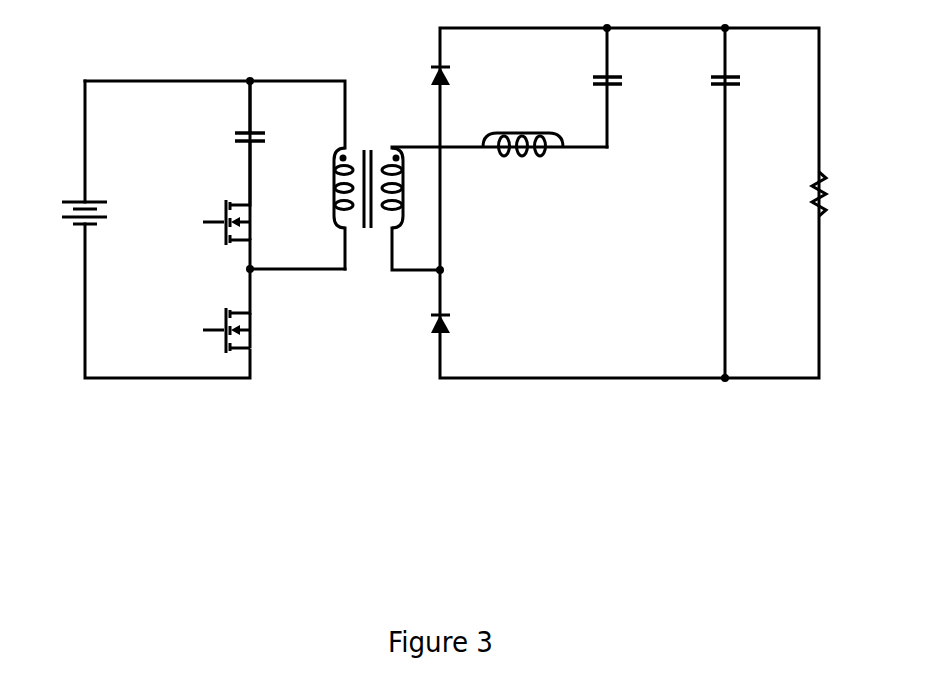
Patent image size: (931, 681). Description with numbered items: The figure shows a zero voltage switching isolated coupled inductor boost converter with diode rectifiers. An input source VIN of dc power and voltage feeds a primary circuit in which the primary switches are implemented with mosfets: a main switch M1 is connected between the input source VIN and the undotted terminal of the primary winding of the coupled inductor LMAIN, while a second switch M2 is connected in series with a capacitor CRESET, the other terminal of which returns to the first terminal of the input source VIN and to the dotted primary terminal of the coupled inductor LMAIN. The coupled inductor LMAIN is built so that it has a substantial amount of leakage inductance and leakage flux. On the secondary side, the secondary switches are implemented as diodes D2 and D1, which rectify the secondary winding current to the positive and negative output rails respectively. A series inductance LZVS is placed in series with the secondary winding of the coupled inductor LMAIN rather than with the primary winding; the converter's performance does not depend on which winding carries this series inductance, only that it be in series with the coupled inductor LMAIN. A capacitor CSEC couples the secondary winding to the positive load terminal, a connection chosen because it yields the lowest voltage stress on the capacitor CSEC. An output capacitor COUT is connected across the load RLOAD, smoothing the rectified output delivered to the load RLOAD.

The input source VIN is at (62, 215).
The capacitor CRESET is at (217, 143).
The primary switch mosfet M2 is at (217, 222).
The primary switch mosfet M1 is at (234, 330).
The coupled inductor LMAIN is at (372, 172).
The secondary switch diode D2 is at (423, 77).
The secondary switch diode D1 is at (424, 327).
The series inductance LZVS is at (523, 127).
The capacitor CSEC is at (634, 79).
The capacitor COUT is at (752, 79).
The load RLOAD is at (855, 197).